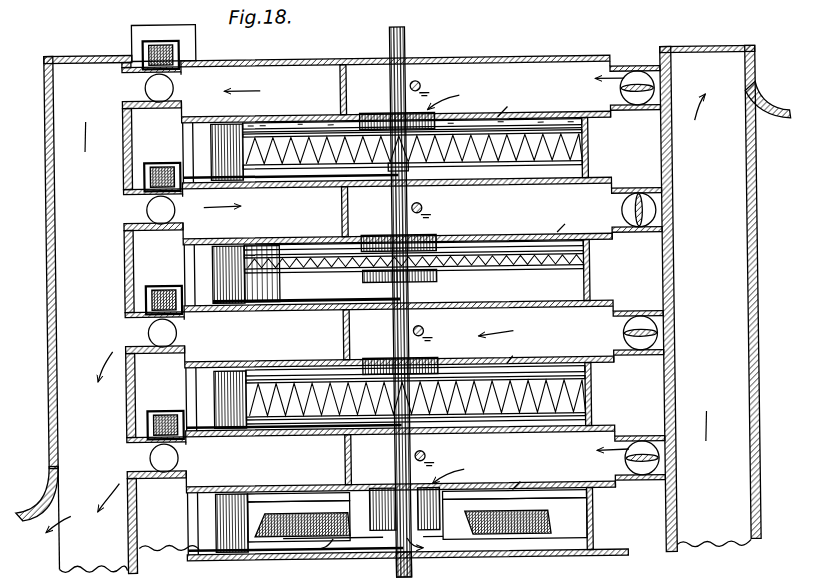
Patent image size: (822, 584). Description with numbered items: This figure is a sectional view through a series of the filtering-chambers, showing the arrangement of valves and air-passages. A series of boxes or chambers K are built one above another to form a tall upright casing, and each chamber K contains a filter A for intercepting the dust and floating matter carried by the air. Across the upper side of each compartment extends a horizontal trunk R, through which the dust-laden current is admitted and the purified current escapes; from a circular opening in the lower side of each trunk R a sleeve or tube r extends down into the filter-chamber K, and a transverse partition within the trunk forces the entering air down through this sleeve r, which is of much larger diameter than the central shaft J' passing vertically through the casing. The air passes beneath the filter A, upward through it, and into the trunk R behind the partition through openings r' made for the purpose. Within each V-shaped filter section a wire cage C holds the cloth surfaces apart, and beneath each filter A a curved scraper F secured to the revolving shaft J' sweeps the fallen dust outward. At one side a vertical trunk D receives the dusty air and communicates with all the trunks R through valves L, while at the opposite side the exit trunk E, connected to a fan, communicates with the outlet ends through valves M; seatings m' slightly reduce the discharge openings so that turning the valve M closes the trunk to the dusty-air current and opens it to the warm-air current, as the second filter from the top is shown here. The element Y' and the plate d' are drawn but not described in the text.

The exit trunk E is at (105, 300).
The vertical trunk D is at (728, 298).
The trunk R is at (406, 308).
The valve M is at (110, 97).
The seating m' is at (154, 302).
The valve L is at (640, 465).
The box or chamber K is at (569, 334).
The central shaft J' is at (385, 302).
The bolt Y' is at (437, 278).
The opening r' is at (253, 327).
The plate d' is at (414, 298).
The filter A is at (414, 275).
The traveling curved scraper F is at (345, 302).
The sleeve or tube r is at (399, 314).
The cage C is at (540, 518).